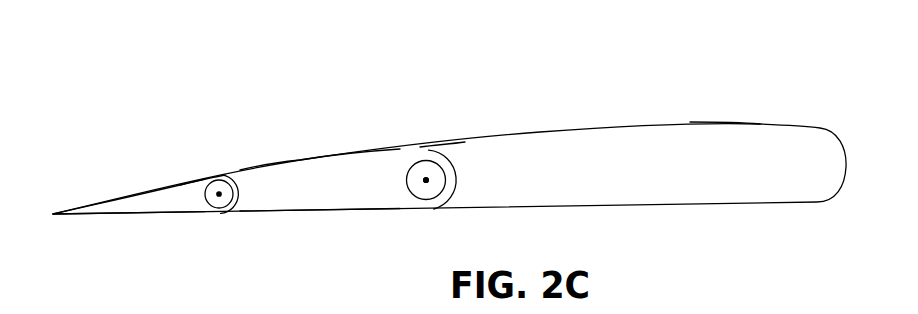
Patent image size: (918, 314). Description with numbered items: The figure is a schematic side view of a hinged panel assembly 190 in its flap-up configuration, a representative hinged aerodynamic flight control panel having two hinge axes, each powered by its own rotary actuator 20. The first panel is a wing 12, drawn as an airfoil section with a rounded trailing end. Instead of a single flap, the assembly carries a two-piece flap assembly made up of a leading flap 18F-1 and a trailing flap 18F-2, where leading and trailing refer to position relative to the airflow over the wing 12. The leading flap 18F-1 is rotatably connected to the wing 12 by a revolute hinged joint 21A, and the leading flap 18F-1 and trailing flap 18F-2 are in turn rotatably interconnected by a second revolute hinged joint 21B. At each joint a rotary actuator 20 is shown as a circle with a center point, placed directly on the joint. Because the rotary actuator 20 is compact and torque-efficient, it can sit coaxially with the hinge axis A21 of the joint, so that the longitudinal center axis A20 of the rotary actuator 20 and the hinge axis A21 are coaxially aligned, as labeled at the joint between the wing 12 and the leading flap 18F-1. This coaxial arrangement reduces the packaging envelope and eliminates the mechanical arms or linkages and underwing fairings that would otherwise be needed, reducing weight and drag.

The wing 12 is at (664, 180).
The leading flap 18F-1 is at (358, 195).
The trailing flap 18F-2 is at (152, 200).
The rotary actuator 20 is at (208, 203).
The revolute hinged joint 21A is at (443, 135).
The revolute hinged joint 21B is at (200, 163).
The hinged panel assembly 190 is at (715, 102).
The longitudinal center axis A20 is at (426, 184).
The hinge axis A21 is at (392, 214).